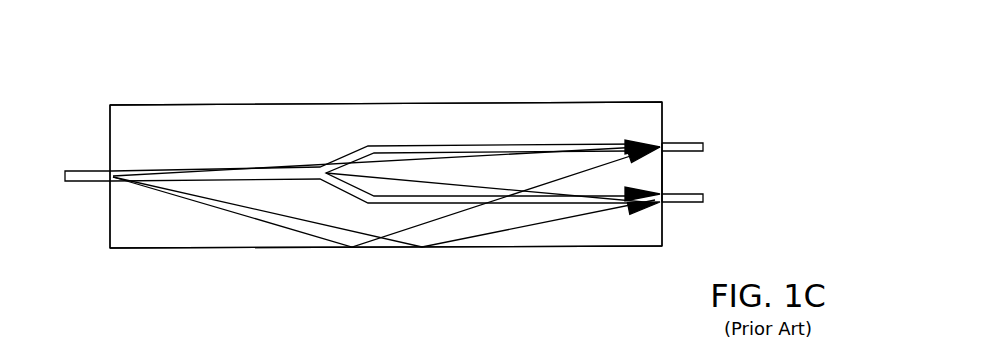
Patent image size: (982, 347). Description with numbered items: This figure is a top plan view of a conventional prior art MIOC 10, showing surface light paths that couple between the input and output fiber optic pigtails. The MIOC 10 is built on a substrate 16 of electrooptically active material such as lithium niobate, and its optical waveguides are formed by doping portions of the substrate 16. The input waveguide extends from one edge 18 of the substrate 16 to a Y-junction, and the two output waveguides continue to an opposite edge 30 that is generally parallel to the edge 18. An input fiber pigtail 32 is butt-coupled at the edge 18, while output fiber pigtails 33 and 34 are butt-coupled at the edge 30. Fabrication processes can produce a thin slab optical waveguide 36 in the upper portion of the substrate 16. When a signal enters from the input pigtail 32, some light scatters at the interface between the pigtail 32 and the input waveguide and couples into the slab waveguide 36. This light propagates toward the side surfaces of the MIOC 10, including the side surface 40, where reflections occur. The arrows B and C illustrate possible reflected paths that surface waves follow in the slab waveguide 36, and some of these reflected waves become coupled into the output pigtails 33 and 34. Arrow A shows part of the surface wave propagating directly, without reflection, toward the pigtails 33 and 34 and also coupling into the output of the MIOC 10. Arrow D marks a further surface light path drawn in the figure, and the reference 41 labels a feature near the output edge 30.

The MIOC 10 is at (578, 258).
The substrate 16 is at (180, 104).
The edge of the substrate 18 is at (110, 215).
The output end face 41 is at (620, 102).
The side surface 40 is at (430, 123).
The input fiber pigtail 32 is at (85, 171).
The slab optical waveguide 36 is at (316, 132).
The output fiber pigtail 34 is at (682, 143).
The output fiber pigtail 33 is at (678, 203).
The edge of the substrate 30 is at (662, 168).
The arrow A is at (383, 160).
The arrow B is at (533, 227).
The arrow C is at (220, 212).
The light ray D is at (467, 185).